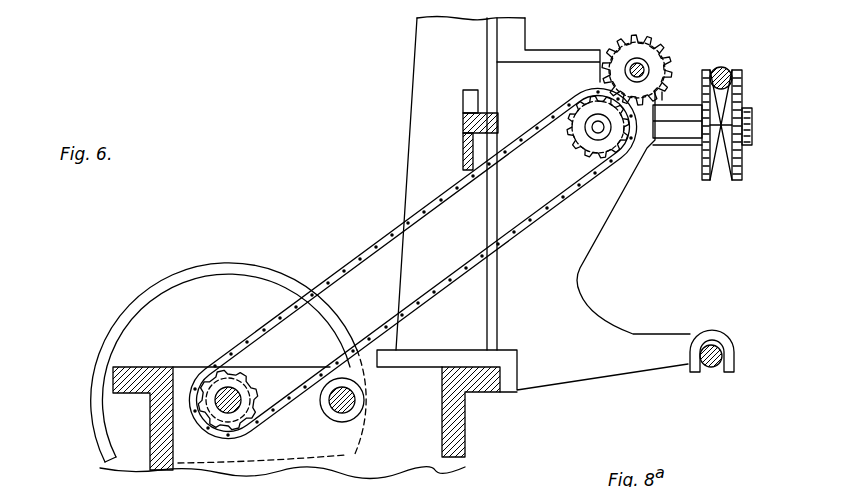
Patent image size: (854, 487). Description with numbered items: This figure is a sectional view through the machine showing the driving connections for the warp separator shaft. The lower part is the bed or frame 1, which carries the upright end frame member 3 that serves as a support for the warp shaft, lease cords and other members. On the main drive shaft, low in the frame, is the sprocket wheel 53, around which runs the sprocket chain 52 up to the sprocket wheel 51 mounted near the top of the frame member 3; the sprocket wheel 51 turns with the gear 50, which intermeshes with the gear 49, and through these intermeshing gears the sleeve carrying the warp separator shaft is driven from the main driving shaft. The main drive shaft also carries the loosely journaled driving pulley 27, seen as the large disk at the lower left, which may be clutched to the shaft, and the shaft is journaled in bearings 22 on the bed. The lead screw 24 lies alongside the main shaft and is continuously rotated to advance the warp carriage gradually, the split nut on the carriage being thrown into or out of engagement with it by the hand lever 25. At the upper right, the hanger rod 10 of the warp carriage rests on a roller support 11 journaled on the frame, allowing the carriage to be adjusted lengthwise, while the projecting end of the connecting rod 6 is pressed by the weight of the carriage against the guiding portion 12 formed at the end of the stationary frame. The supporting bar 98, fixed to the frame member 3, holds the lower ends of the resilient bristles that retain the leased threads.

The bed or frame 1 is at (466, 446).
The end frame member 3 is at (425, 66).
The connecting rod 6 is at (711, 368).
The hanger rod 10 is at (736, 74).
The roller support 11 is at (724, 110).
The guiding portion 12 is at (736, 342).
The bearing block 22 is at (125, 386).
The lead screw 24 is at (366, 406).
The hand lever 25 is at (238, 408).
The driving pulley 27 is at (116, 330).
The gear 49 is at (672, 62).
The gear 50 is at (578, 158).
The sprocket wheel 51 is at (577, 118).
The sprocket chain 52 is at (372, 252).
The sprocket wheel 53 is at (258, 380).
The supporting bar 98 is at (463, 125).